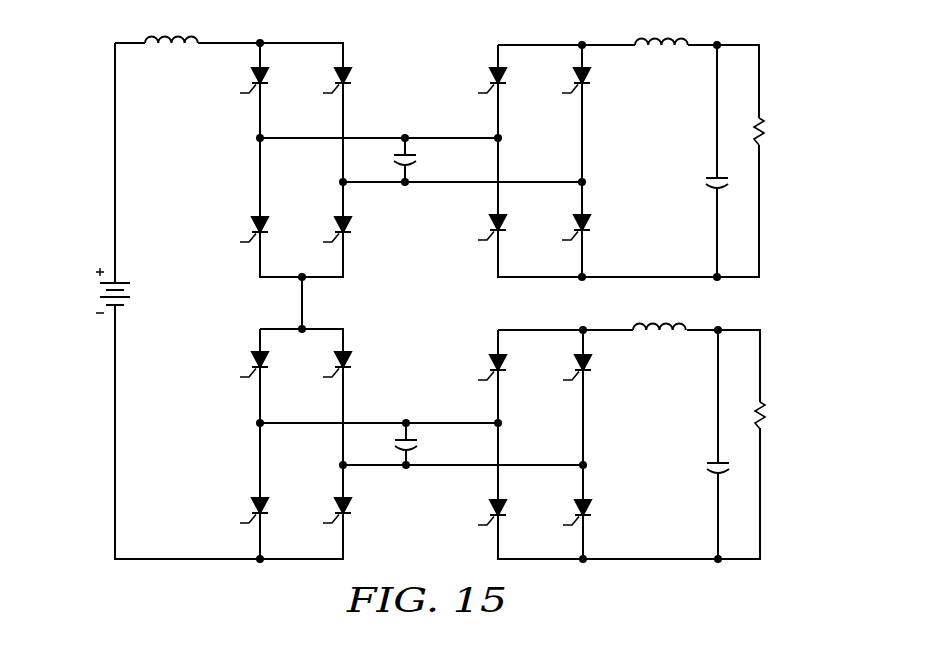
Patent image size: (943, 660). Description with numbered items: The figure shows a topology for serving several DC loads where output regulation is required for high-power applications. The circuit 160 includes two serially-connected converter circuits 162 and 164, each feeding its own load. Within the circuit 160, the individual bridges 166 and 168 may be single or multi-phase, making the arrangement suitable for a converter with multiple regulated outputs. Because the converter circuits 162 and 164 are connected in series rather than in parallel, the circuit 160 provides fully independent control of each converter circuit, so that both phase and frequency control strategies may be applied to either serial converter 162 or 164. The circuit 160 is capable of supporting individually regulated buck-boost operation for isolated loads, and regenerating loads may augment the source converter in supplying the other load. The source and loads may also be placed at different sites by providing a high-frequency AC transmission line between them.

The circuit 160 is at (94, 51).
The converter circuit 162 is at (778, 91).
The converter circuit 164 is at (779, 374).
The bridge 166 is at (212, 155).
The bridge 168 is at (212, 440).